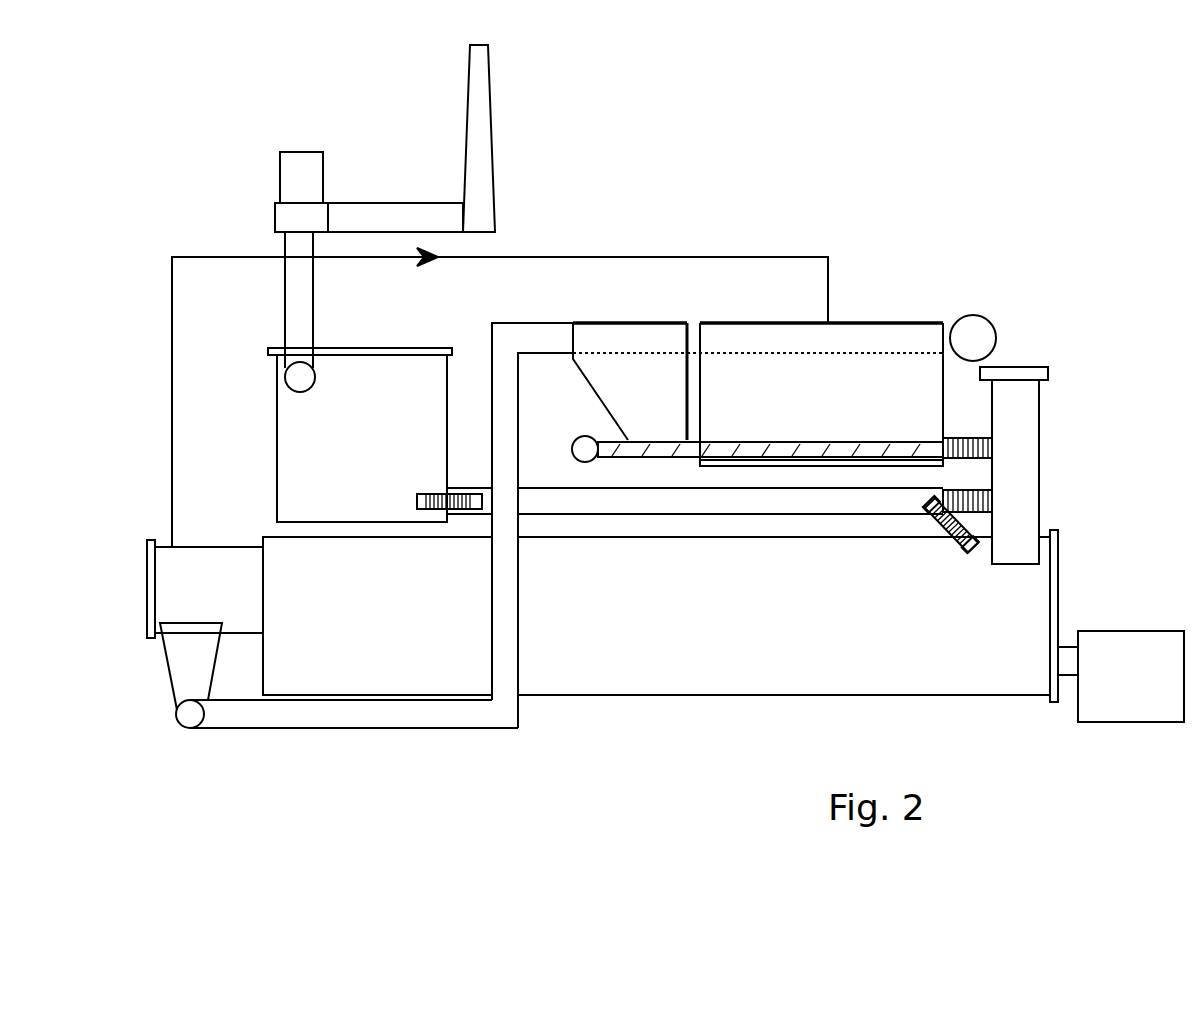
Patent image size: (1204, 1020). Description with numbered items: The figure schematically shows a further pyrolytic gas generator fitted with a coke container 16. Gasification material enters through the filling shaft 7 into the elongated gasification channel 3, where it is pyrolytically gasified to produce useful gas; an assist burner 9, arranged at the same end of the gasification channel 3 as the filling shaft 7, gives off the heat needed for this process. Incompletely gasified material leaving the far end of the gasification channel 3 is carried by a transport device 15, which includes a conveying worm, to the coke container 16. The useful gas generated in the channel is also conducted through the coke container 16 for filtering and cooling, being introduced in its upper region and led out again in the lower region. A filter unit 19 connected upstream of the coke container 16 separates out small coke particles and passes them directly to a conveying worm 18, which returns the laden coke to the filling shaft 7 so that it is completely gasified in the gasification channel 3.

The gasification channel 3 is at (720, 640).
The filling shaft 7 is at (1018, 423).
The assist burner 9 is at (1142, 702).
The transport device 15 is at (367, 715).
The coke container 16 is at (875, 342).
The conveying worm 18 is at (742, 447).
The filter unit 19 is at (620, 347).